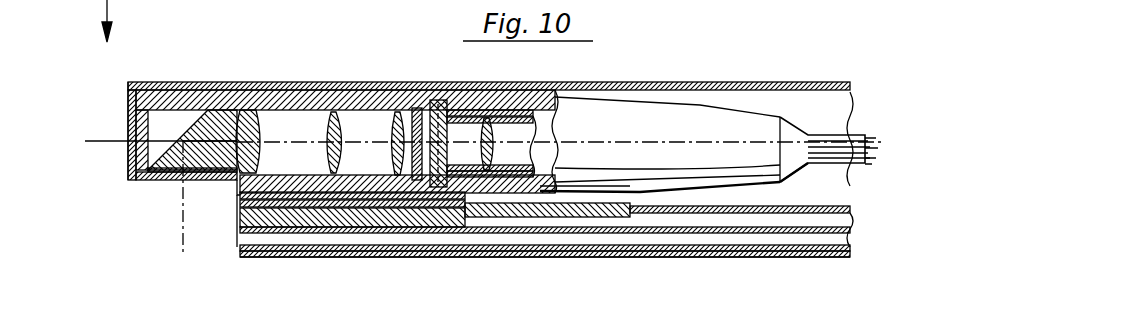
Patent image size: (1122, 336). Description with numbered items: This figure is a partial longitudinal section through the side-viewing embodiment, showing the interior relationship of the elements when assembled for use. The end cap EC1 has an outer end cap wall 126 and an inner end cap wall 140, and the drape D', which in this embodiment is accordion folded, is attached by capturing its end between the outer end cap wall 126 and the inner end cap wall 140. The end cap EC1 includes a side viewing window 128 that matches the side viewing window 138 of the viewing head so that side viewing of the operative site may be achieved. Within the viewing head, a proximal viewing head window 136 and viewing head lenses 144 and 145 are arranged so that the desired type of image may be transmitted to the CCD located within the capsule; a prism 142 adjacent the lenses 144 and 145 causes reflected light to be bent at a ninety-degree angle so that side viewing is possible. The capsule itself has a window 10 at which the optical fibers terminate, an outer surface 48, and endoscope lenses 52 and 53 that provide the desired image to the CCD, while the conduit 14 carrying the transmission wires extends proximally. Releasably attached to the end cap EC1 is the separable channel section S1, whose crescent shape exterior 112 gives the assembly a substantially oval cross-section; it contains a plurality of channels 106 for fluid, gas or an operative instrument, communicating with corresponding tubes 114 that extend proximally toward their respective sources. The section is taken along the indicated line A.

The window 10 is at (427, 113).
The conduit 14 is at (830, 137).
The capsule outer surface 48 is at (637, 123).
The endoscope lens 52 is at (431, 106).
The endoscope lens 53 is at (470, 110).
The channels 106 is at (232, 244).
The crescent shape exterior 112 is at (360, 258).
The tubes 114 is at (637, 256).
The outer end cap wall 126 is at (338, 92).
The side viewing window 128 is at (198, 182).
The proximal viewing head window 136 is at (398, 192).
The side viewing window 138 is at (153, 178).
The inner end cap wall 140 is at (402, 110).
The prism 142 is at (215, 155).
The viewing head lens 144 is at (241, 118).
The viewing head lens 145 is at (283, 125).
The section line A- A is at (473, 81).
The end cap EC1 is at (197, 72).
The separable channel section S1 is at (328, 272).
The drape D' is at (740, 114).